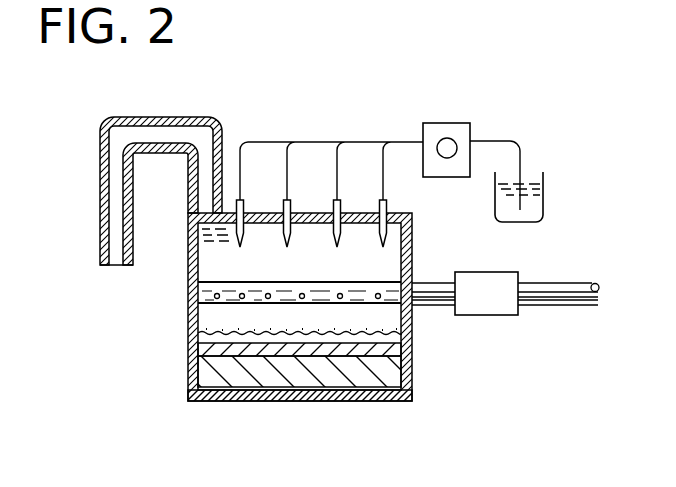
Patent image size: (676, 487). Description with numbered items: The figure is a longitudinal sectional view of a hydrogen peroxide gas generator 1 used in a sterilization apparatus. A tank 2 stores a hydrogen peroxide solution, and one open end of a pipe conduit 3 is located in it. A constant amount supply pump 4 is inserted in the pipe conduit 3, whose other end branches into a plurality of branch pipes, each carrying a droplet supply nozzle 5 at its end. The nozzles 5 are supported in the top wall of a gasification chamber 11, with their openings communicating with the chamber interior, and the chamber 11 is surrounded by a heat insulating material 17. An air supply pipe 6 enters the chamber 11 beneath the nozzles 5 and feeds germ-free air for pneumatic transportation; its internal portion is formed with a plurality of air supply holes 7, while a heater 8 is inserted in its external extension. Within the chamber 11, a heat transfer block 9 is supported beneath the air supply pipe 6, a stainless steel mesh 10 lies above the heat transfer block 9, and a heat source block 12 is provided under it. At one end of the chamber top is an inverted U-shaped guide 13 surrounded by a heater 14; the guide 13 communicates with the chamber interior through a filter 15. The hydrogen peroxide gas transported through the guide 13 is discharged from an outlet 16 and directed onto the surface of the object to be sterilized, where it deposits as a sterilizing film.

The hydrogen peroxide gas generator 1 is at (261, 129).
The tank 2 is at (543, 185).
The pipe conduit 3 is at (360, 142).
The constant amount supply pump 4 is at (447, 123).
The droplet supply nozzle 5 is at (285, 238).
The air supply pipe 6 is at (551, 288).
The air supply holes 7 is at (373, 293).
The heater 8 is at (493, 305).
The heat transfer block 9 is at (381, 349).
The stainless steel mesh 10 is at (197, 333).
The gasification chamber 11 is at (412, 240).
The heat source block 12 is at (238, 367).
The inverted U-shaped guide 13 is at (173, 137).
The heater 14 is at (220, 120).
The filter 15 is at (199, 237).
The outlet 16 is at (117, 258).
The heat insulating material 17 is at (361, 397).